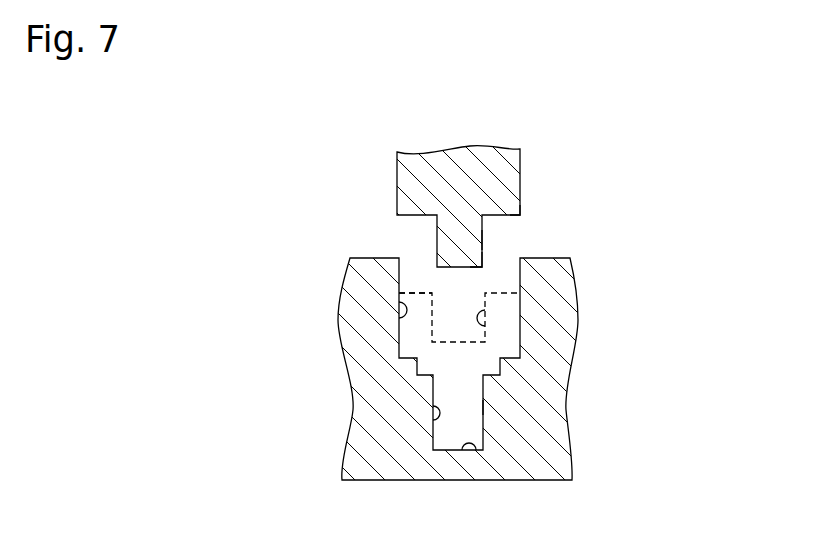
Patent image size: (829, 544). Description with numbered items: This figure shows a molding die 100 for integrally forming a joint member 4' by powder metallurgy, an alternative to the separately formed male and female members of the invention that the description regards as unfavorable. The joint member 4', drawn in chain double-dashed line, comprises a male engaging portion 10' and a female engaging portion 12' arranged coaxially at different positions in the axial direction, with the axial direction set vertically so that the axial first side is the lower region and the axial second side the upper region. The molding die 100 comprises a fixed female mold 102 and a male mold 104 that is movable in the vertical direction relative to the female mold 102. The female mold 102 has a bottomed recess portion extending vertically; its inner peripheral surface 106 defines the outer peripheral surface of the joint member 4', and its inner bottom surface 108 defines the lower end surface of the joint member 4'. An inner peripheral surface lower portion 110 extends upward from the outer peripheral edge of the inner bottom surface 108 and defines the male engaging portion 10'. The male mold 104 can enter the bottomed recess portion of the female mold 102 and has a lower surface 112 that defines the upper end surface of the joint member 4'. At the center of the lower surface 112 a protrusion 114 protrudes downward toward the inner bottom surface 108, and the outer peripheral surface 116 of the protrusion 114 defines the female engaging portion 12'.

The molding die 100 is at (471, 93).
The female mold 102 is at (580, 355).
The male mold 104 is at (396, 182).
The inner peripheral surface 106 is at (398, 314).
The inner bottom surface 108 is at (461, 450).
The inner peripheral surface lower portion 110 is at (433, 424).
The lower surface 112 is at (520, 215).
The protrusion 114 is at (485, 240).
The outer peripheral surface 116 is at (484, 259).
The joint member 4' is at (399, 259).
The female engaging portion 12' is at (515, 311).
The male engaging portion 10' is at (546, 418).